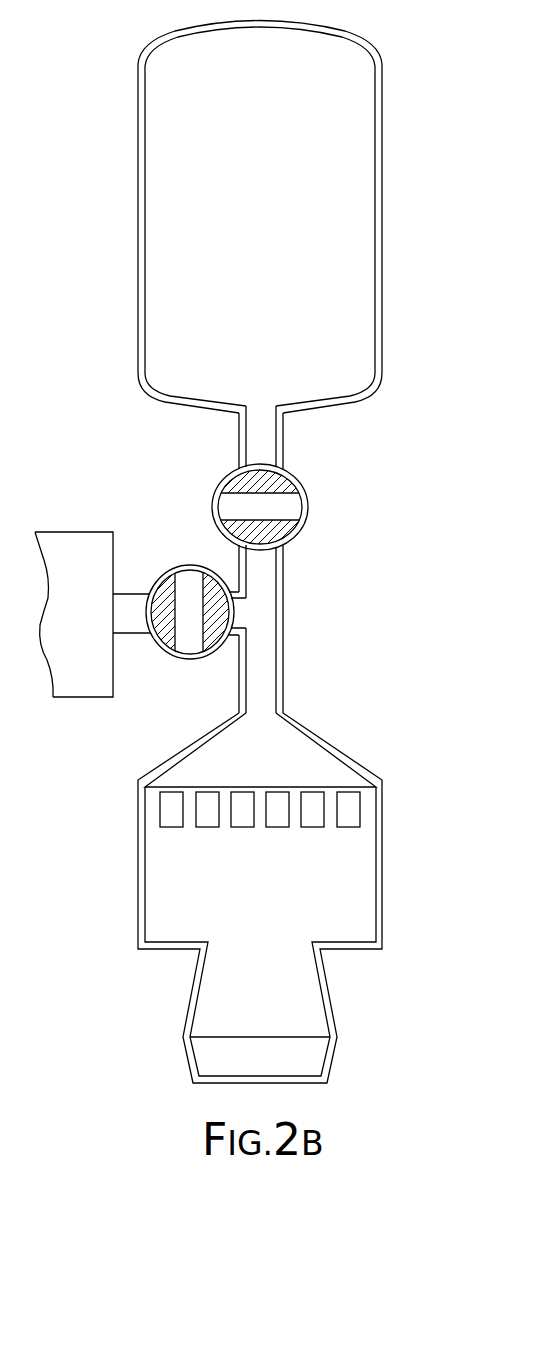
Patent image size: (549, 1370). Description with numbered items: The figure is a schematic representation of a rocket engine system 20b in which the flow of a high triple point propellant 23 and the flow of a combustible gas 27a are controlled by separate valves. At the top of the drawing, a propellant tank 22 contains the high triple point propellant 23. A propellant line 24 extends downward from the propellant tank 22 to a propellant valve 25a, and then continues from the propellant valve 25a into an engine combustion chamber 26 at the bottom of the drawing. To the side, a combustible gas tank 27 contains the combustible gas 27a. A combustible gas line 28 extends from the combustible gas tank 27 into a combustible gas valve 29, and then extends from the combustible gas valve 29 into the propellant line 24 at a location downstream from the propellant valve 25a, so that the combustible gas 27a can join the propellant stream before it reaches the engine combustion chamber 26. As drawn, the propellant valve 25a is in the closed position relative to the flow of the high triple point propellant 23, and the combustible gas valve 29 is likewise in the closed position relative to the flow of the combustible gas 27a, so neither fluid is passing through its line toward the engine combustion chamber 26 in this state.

The rocket engine system 20b is at (112, 332).
The propellant tank 22 is at (382, 268).
The high triple point propellant 23 is at (310, 189).
The propellant line 24 is at (239, 437).
The propellant valve 25a is at (292, 528).
The engine combustion chamber 26 is at (206, 735).
The combustible gas tank 27 is at (102, 530).
The combustible gas 27a is at (100, 665).
The combustible gas line 28 is at (127, 633).
The combustible gas valve 29 is at (198, 571).